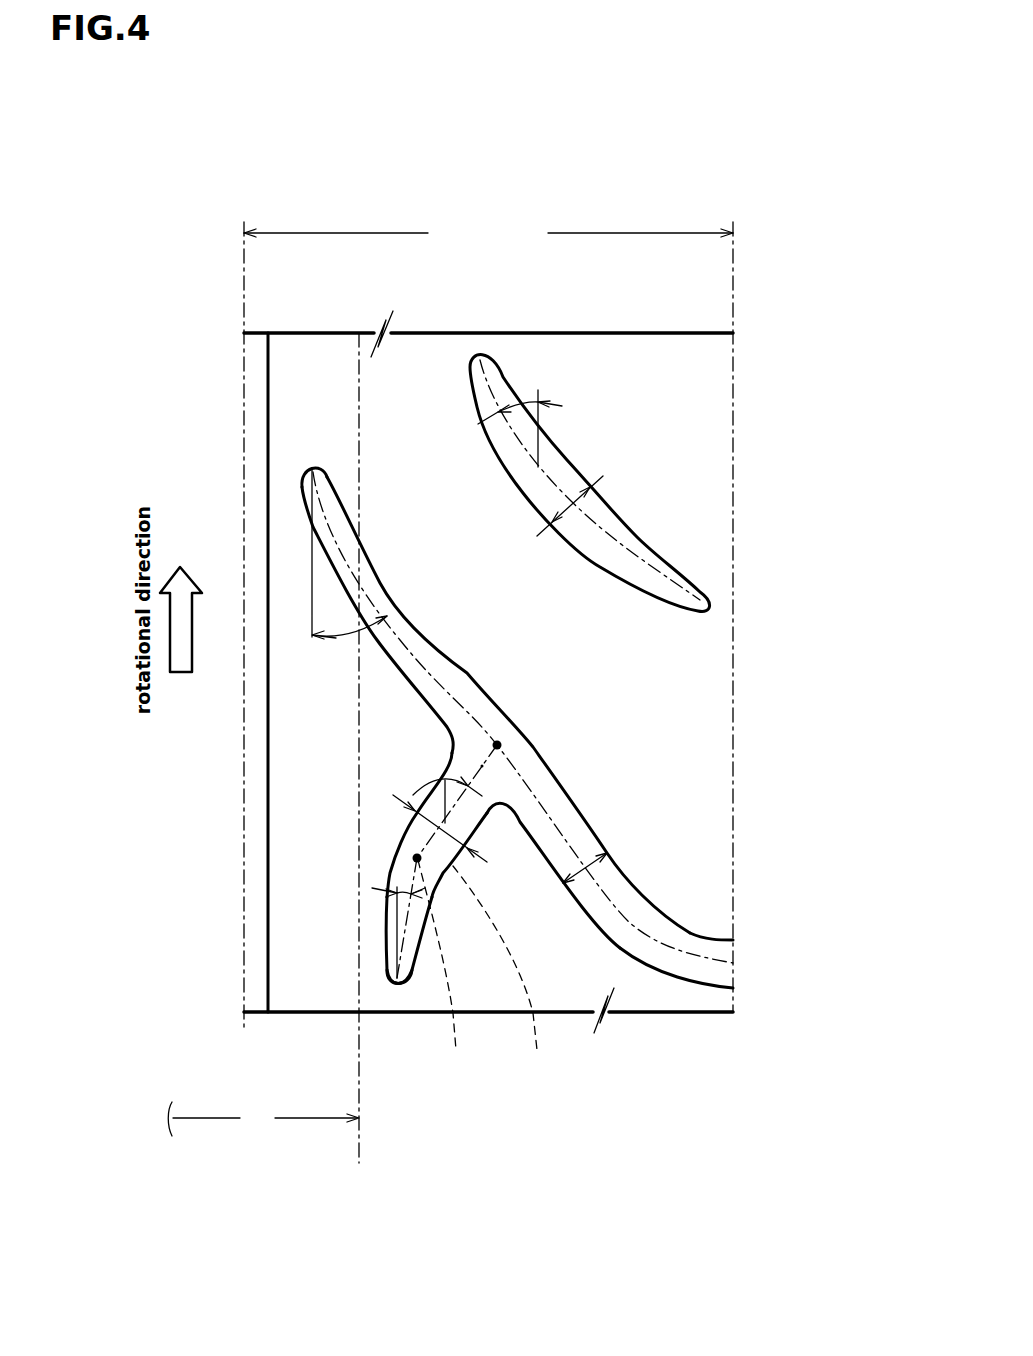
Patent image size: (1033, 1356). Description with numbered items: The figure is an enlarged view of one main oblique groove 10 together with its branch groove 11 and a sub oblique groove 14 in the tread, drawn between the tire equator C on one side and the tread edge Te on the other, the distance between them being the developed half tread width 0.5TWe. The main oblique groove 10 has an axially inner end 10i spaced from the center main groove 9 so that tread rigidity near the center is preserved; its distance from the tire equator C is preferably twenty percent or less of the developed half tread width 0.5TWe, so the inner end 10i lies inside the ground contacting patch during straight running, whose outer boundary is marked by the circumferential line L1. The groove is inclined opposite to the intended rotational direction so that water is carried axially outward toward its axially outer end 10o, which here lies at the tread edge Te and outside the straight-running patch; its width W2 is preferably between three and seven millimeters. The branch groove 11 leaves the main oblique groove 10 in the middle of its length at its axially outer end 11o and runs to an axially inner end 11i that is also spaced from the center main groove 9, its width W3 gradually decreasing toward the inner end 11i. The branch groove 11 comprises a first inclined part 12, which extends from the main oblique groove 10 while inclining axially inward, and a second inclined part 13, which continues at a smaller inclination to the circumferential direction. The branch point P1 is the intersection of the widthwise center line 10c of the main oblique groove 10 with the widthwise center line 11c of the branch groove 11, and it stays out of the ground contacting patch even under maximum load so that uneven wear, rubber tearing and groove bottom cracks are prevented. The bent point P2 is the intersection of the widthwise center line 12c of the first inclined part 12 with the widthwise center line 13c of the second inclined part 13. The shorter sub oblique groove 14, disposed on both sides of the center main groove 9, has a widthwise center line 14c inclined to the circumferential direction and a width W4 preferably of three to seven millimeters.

The center main groove 9 is at (264, 380).
The main oblique groove 10 is at (502, 716).
The axially inner end of main oblique groove 10i is at (311, 467).
The axially outer end of main oblique groove 10o is at (734, 963).
The widthwise center line of main oblique groove 10c is at (640, 918).
The branch groove 11 is at (453, 938).
The axially inner end of branch groove 11i is at (396, 982).
The axially outer end of branch groove 11o is at (483, 767).
The widthwise center line of branch groove 11c is at (493, 996).
The first inclined part 12 is at (412, 794).
The widthwise center line of first inclined part 12c is at (506, 974).
The second inclined part 13 is at (386, 918).
The widthwise center line of second inclined part 13c is at (446, 971).
The sub oblique groove 14 is at (645, 483).
The widthwise center line of sub oblique groove 14c is at (660, 543).
The branch point P1 is at (500, 745).
The bent point P2 is at (416, 834).
The tire equator C is at (243, 612).
The tread edge Te is at (734, 377).
The circumferential line L1 is at (358, 762).
The distance from tire equator W is at (263, 1119).
The width of main oblique groove W2 is at (604, 853).
The width of branch groove W3 is at (454, 828).
The width of sub oblique groove W4 is at (579, 495).
The developed half tread width 0.5TWe is at (488, 234).